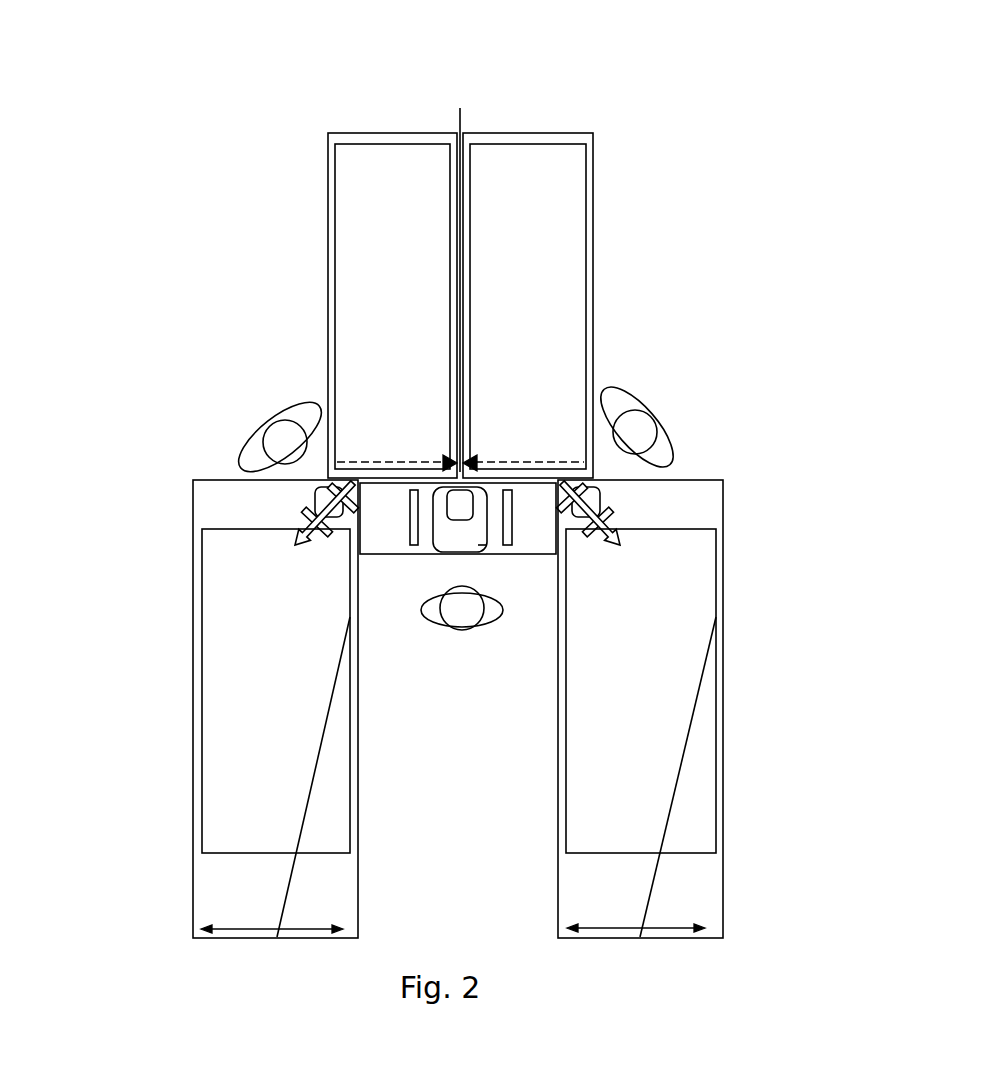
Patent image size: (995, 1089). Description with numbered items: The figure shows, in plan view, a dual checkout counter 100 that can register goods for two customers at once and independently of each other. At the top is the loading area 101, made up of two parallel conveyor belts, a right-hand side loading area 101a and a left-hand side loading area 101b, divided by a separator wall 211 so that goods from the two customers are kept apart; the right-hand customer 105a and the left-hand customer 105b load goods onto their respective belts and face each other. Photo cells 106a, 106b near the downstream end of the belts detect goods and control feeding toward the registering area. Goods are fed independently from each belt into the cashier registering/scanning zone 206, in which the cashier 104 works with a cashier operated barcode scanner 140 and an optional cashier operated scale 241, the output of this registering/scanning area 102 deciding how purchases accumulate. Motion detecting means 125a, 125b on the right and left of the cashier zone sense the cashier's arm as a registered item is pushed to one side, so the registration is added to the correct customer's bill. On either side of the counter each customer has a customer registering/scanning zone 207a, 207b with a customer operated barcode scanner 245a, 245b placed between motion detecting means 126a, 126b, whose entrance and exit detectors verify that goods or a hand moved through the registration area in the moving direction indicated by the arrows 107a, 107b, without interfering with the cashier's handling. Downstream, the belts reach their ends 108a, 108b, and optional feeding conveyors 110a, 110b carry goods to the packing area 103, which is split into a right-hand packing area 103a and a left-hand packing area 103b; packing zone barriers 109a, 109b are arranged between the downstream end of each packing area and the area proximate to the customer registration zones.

The dual checkout counter 100 is at (490, 31).
The loading area 101 is at (460, 281).
The right-hand side loading area 101a is at (528, 306).
The left-hand side loading area 101b is at (392, 306).
The separator wall 211 is at (462, 243).
The photo cells right-hand side 106a is at (489, 457).
The photo cells left-hand side 106b is at (433, 457).
The cashier registering/scanning zone 206 is at (490, 489).
The cashier operated barcode scanner 140 is at (455, 512).
The registering/scanning area 102 is at (474, 563).
The cashier 104 is at (462, 618).
The customer right-hand side 105a is at (640, 430).
The customer left-hand side 105b is at (287, 440).
The moving direction 107a is at (621, 544).
The moving direction 107b is at (338, 540).
The customer registering/scanning zone, right-hand side 207a is at (616, 488).
The customer registering/scanning zone, left-hand side 207b is at (300, 488).
The customer operated barcode scanner right-hand side 245a is at (593, 497).
The customer operated barcode scanner left-hand side 245b is at (322, 496).
The motion detecting means, customer right-hand side 126a is at (596, 481).
The motion detecting means, customer left-hand side 126b is at (333, 477).
The motion detecting means cashier right-hand side 125a is at (512, 540).
The motion detecting means cashier left-hand side 125b is at (412, 540).
The cashier operated scale 241 is at (483, 545).
The packing area 103 is at (295, 891).
The packing area, right-hand side 103a is at (636, 911).
The packing area, left-hand side 103b is at (272, 907).
The end of conveyor belt right-hand side 108a is at (693, 853).
The end of conveyor belt left-hand side 108b is at (227, 853).
The feeding conveyor 110a is at (632, 707).
The feeding conveyor 110b is at (274, 698).
The packing zone barriers right-hand side 109a is at (680, 777).
The packing zone barriers left-hand side 109b is at (318, 766).